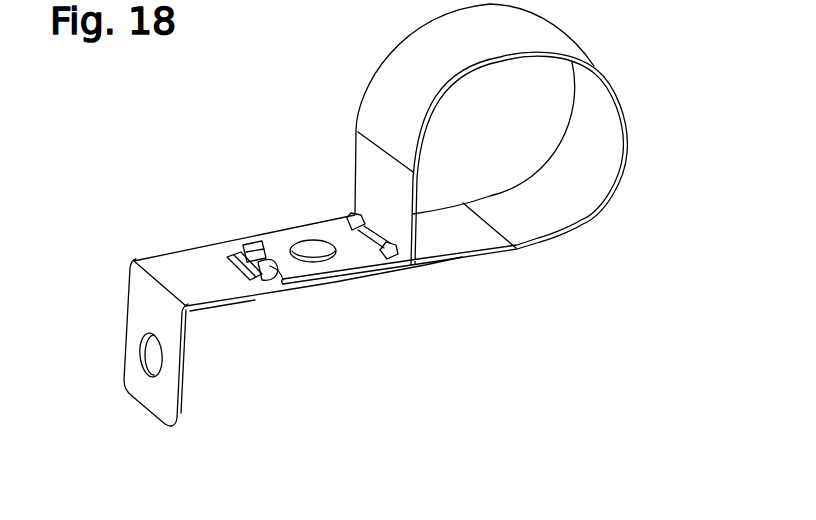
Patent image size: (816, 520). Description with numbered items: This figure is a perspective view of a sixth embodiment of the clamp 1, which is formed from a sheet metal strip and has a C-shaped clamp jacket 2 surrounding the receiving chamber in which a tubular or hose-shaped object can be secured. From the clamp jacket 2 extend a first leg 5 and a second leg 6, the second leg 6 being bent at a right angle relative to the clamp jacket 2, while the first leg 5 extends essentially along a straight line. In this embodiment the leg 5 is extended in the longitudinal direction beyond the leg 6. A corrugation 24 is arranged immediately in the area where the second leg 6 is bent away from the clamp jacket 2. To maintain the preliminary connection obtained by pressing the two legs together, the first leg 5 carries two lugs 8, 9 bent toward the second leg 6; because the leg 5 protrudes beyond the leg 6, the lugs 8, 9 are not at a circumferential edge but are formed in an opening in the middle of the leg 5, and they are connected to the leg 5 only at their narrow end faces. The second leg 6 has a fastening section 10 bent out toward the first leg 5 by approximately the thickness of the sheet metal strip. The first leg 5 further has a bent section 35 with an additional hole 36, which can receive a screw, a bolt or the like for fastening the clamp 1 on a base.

The clamp 1 is at (667, 46).
The clamp jacket 2 is at (639, 117).
The first leg 5 is at (232, 305).
The second leg 6 is at (296, 238).
The lug 8 is at (253, 245).
The lug 9 is at (268, 276).
The fastening section 10 is at (233, 253).
The corrugation 24 is at (390, 252).
The bent section 35 is at (182, 411).
The hole 36 is at (150, 355).